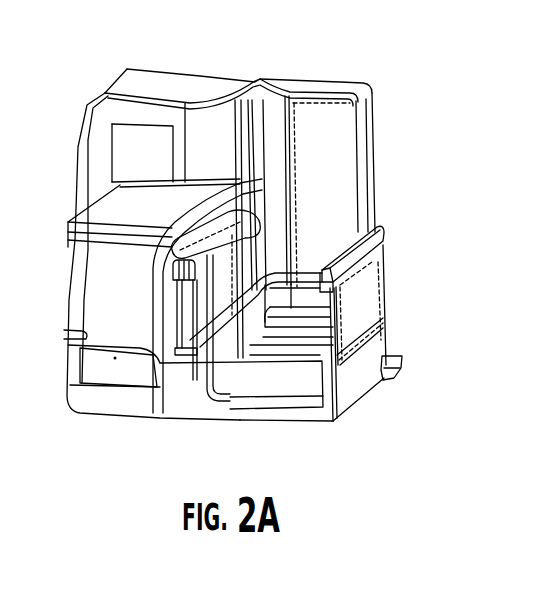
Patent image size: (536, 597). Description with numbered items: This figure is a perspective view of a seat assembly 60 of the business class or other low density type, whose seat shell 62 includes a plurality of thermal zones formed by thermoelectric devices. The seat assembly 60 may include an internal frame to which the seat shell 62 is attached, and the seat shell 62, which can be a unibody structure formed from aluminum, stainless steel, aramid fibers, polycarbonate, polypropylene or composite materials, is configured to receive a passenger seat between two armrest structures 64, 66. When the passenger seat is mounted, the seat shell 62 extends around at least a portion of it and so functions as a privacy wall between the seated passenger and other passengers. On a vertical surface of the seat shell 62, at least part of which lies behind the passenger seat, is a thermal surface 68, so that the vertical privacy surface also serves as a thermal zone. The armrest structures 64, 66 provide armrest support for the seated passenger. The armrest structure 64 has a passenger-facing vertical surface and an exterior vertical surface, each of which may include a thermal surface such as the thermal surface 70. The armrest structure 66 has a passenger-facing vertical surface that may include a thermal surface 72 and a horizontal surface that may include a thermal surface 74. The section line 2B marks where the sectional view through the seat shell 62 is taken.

The seat assembly 60 is at (330, 50).
The section line 2B is at (237, 183).
The seat shell 62 is at (366, 194).
The armrest structure 64 is at (380, 262).
The armrest structure 66 is at (183, 336).
The thermal surface 68 is at (335, 161).
The thermal surface 70 is at (394, 373).
The thermal surface 72 is at (190, 380).
The thermal surface 74 is at (88, 243).